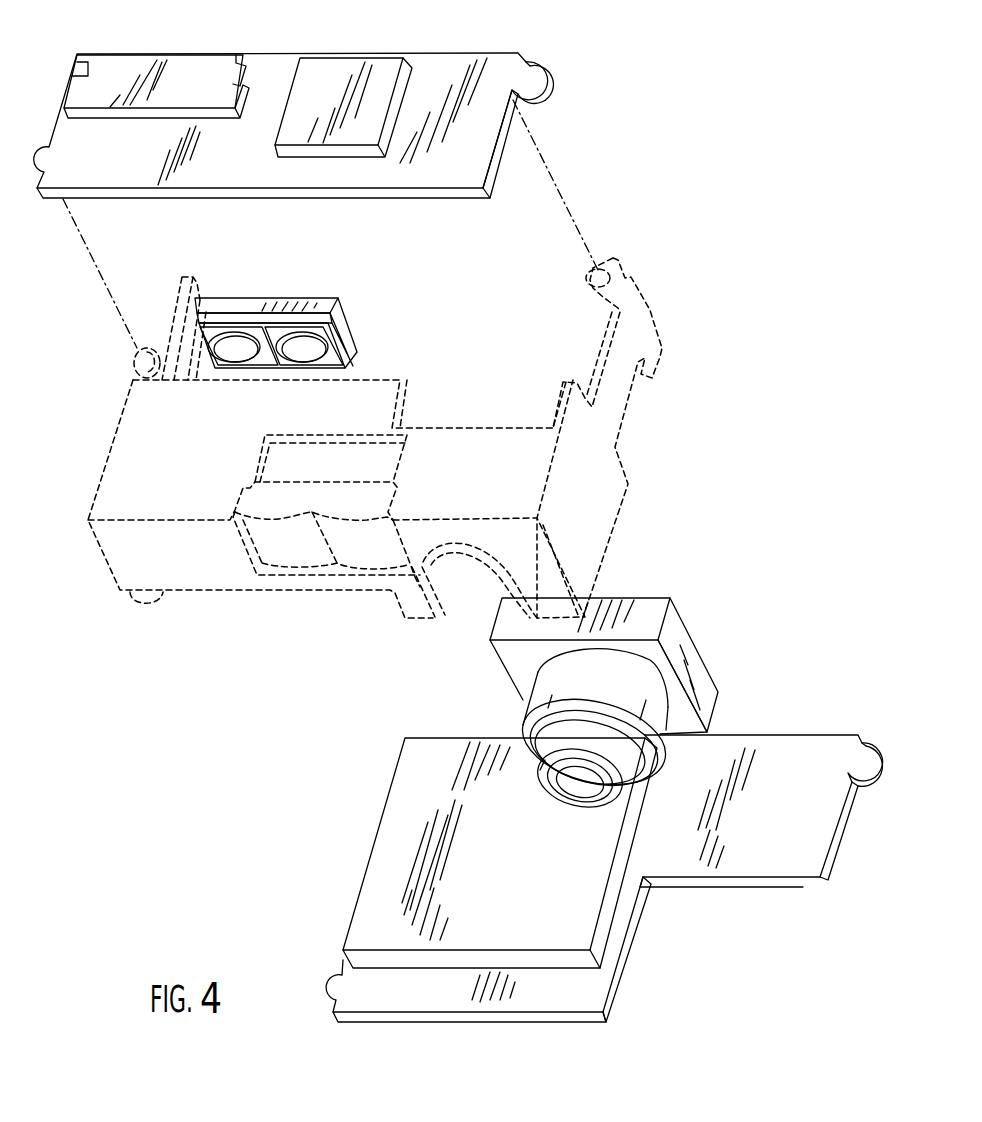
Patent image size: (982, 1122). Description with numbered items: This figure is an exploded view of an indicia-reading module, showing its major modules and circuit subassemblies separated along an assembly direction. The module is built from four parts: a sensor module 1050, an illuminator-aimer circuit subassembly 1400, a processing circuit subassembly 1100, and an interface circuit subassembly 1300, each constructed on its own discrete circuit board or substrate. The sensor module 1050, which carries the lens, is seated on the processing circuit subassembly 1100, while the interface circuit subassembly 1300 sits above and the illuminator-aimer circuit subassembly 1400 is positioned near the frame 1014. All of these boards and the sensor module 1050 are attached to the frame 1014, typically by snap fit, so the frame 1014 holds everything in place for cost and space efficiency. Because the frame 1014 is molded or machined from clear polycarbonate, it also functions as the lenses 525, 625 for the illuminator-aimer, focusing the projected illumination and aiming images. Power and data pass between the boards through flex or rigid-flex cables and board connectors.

The interface circuit subassembly 1300 is at (537, 112).
The illuminator-aimer circuit subassembly 1400 is at (368, 323).
The frame 1014 is at (663, 322).
The lens 525 is at (285, 542).
The lens 625 is at (373, 548).
The sensor module 1050 is at (703, 642).
The processing circuit subassembly 1100 is at (757, 718).